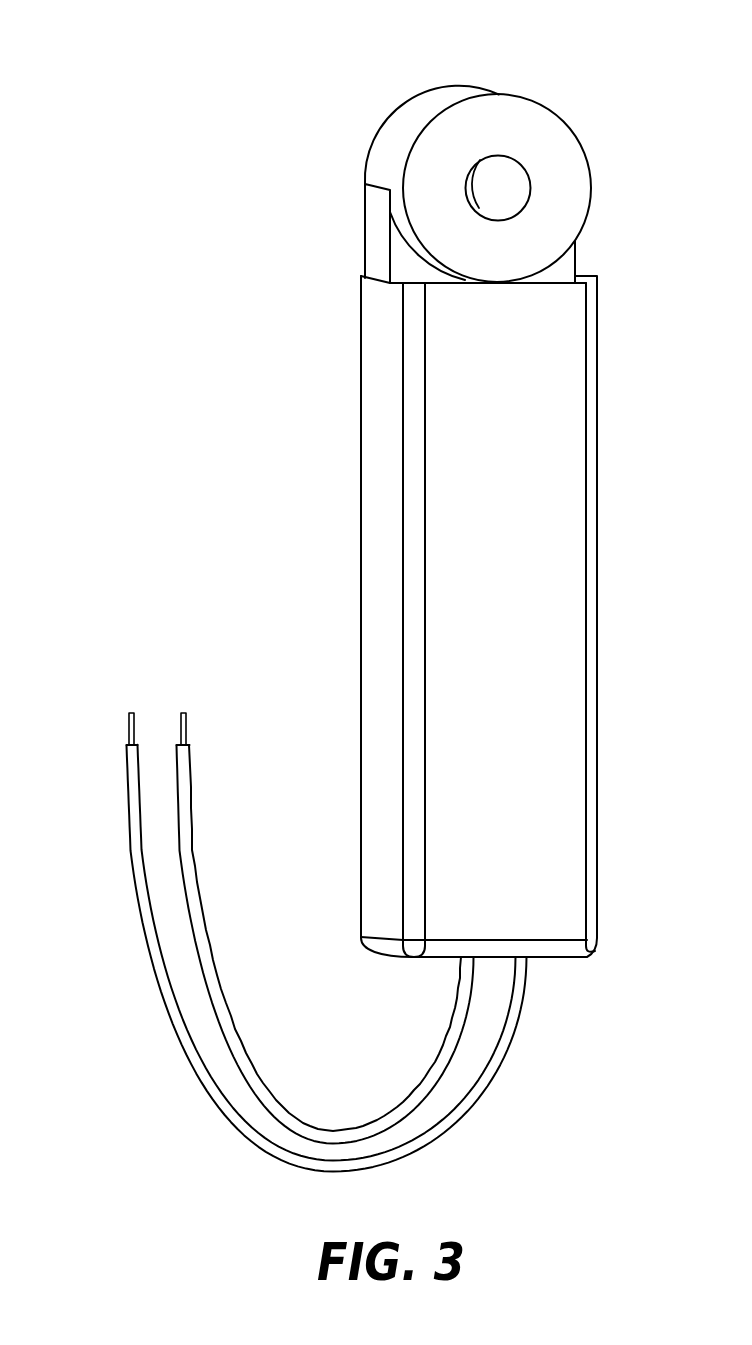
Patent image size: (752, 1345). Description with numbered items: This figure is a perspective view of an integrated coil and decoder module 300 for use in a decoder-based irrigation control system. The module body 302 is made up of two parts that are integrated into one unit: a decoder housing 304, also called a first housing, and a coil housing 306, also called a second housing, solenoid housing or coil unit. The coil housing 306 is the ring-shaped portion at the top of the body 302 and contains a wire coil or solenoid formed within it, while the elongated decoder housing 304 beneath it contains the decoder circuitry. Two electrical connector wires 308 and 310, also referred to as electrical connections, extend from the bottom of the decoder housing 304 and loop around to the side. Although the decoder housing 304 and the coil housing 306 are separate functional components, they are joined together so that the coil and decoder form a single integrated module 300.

The integrated coil and decoder module 300 is at (510, 36).
The module body 302 is at (609, 92).
The decoder housing 304 is at (343, 280).
The coil housing 306 is at (343, 93).
The electrical connector wire 308 is at (128, 830).
The electrical connector wire 310 is at (192, 828).